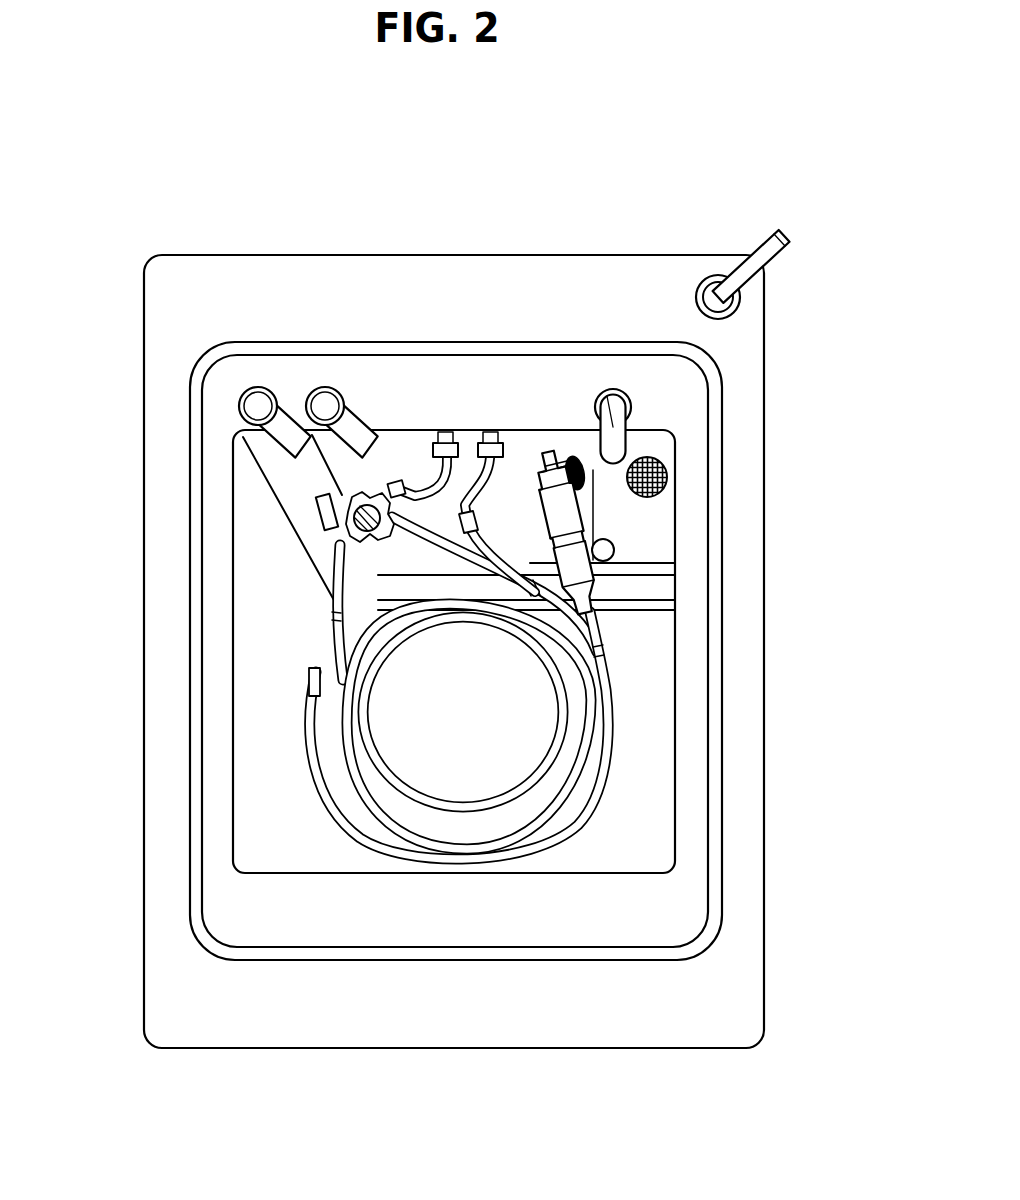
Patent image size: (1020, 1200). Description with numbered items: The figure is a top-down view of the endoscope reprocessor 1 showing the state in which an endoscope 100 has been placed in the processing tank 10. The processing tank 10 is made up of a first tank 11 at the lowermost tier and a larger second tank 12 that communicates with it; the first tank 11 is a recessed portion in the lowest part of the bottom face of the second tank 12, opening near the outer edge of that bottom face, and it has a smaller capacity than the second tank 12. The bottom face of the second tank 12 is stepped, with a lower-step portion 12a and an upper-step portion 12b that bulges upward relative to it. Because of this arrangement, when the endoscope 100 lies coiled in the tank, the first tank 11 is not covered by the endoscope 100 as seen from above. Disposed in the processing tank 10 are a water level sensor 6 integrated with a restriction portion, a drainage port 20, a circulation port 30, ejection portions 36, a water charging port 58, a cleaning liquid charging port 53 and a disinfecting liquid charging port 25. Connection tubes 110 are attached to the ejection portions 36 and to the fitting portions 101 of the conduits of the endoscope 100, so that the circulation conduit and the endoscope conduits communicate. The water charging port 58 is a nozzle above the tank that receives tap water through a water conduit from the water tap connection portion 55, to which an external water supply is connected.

The endoscope reprocessor 1 is at (211, 215).
The processing tank 10 is at (262, 683).
The first tank 11 is at (650, 515).
The second tank 12 is at (833, 623).
The lower-step portion 12a is at (640, 600).
The upper-step portion 12b is at (627, 700).
The water level sensor 6 is at (617, 553).
The drainage port 20 is at (643, 457).
The disinfecting liquid charging port 25 is at (365, 412).
The circulation port 30 is at (585, 462).
The ejection portions 36 is at (490, 443).
The cleaning liquid charging port 53 is at (612, 390).
The water tap connection portion 55 is at (718, 275).
The water charging port 58 is at (300, 425).
The endoscope 100 is at (330, 510).
The fitting portions 101 is at (335, 604).
The connection tubes 110 is at (425, 483).